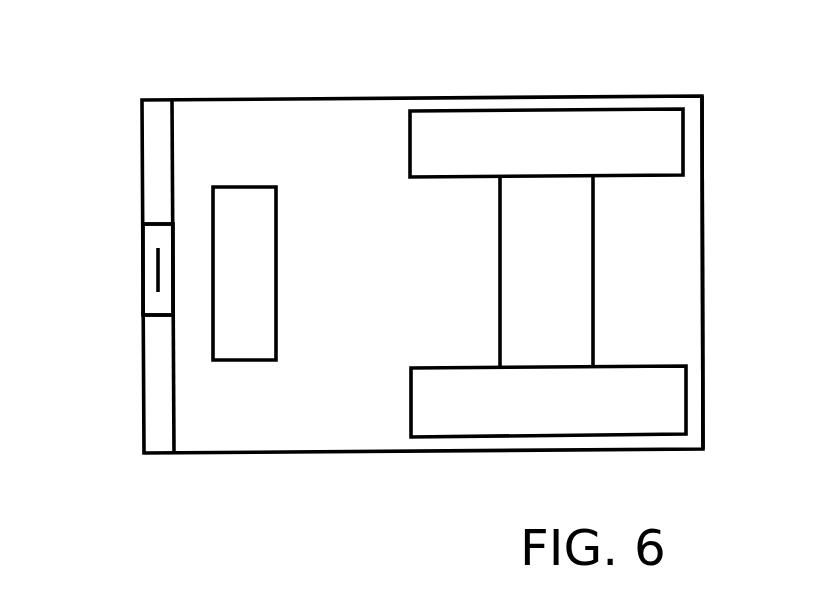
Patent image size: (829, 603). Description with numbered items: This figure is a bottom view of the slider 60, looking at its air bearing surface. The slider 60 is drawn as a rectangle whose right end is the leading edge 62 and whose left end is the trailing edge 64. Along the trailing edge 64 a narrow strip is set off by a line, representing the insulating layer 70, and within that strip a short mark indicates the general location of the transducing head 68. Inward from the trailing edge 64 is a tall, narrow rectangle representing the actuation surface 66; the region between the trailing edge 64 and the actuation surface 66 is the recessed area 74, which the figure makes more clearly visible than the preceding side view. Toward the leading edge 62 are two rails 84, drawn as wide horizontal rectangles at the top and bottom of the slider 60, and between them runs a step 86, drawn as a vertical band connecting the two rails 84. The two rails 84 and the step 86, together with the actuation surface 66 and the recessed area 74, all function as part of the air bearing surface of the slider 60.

The slider 60 is at (323, 432).
The leading edge 62 is at (711, 259).
The trailing edge 64 is at (129, 323).
The actuation surface 66 is at (257, 260).
The transducing head 68 is at (157, 270).
The insulating layer 70 is at (162, 442).
The recessed area 74 is at (189, 240).
The rails 84 is at (507, 130).
The step 86 is at (557, 270).